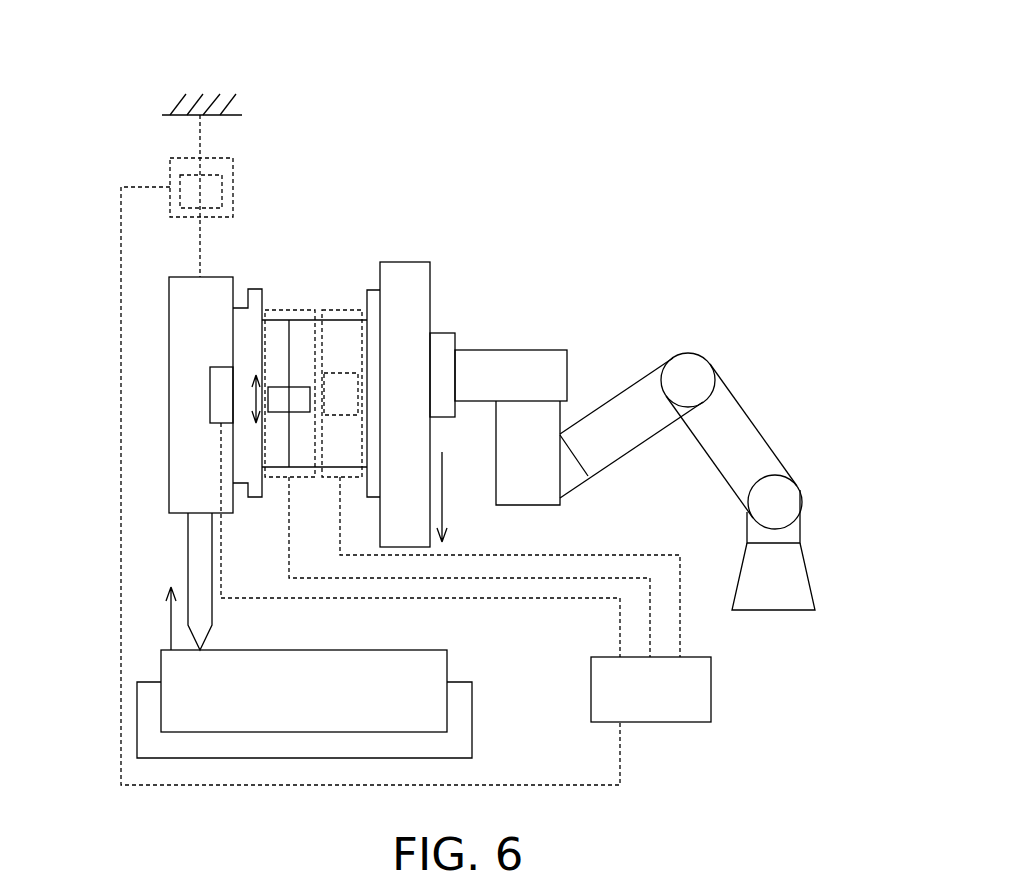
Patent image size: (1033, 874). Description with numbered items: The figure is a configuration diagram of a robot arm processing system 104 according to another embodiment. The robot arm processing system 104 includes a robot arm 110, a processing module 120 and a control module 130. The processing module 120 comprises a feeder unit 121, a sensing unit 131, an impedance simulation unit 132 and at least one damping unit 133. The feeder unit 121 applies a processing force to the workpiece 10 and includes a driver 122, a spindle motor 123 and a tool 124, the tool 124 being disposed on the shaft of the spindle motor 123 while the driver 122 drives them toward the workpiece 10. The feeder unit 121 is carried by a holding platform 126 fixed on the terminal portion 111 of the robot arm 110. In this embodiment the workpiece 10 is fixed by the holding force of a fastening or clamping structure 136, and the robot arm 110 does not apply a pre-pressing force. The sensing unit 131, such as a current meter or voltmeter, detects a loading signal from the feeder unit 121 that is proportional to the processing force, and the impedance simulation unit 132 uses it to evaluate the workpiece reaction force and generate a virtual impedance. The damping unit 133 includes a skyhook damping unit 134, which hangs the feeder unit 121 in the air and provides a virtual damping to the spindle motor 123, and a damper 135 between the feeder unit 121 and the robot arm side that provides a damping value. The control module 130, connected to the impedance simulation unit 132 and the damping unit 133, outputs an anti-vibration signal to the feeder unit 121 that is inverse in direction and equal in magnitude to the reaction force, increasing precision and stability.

The robot arm processing system 104 is at (79, 27).
The workpiece 10 is at (447, 661).
The robot arm 110 is at (783, 375).
The terminal portion 111 is at (472, 362).
The processing module 120 is at (110, 215).
The feeder unit 121 is at (660, 53).
The driver 122 is at (241, 306).
The spindle motor 123 is at (176, 292).
The tool 124 is at (205, 623).
The holding platform 126 is at (406, 287).
The control module 130 is at (651, 723).
The sensing unit 131 is at (210, 390).
The impedance simulation unit 132 is at (343, 310).
The damping unit 133 is at (660, 155).
The skyhook damping unit 134 is at (233, 183).
The damper 135 is at (290, 310).
The clamping structure 136 is at (472, 720).